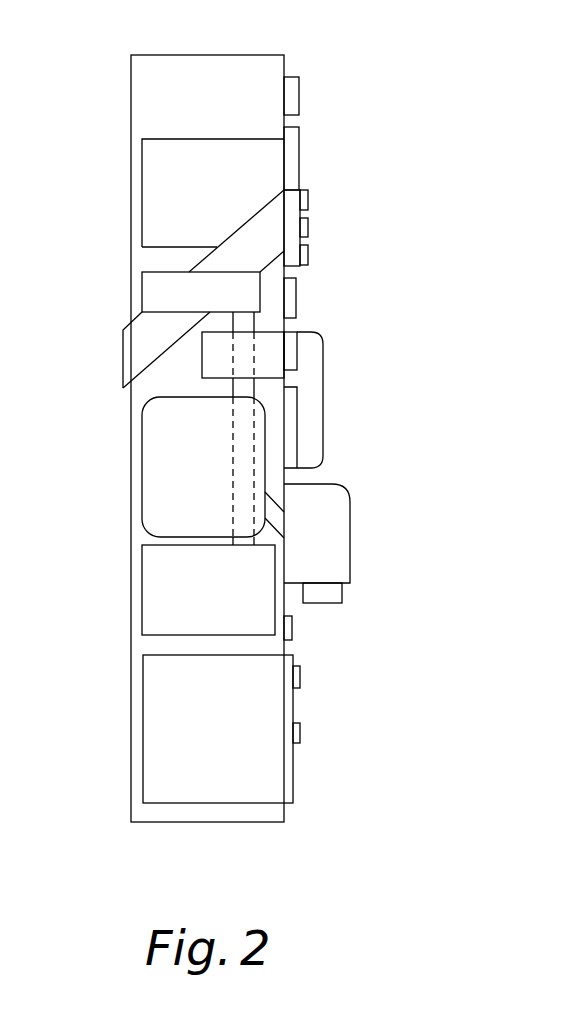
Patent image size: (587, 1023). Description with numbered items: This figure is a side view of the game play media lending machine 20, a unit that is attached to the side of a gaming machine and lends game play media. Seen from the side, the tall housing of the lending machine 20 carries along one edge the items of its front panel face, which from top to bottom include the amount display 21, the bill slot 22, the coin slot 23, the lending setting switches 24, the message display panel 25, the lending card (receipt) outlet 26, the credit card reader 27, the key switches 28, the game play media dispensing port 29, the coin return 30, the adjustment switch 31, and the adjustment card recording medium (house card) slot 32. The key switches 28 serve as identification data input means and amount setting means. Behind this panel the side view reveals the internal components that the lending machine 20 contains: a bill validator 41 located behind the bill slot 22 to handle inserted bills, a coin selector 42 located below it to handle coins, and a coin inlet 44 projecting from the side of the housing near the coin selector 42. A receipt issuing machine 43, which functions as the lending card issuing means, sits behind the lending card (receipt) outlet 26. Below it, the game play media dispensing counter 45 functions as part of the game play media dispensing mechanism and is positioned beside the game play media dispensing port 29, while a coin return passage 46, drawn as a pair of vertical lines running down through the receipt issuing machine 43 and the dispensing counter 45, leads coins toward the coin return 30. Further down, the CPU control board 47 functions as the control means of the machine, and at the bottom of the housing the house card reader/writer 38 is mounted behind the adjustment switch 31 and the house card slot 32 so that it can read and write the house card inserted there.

The game play media lending machine 20 is at (131, 55).
The amount display 21 is at (299, 96).
The bill slot 22 is at (299, 142).
The coin slot 23 is at (292, 190).
The lending setting switches 24 is at (308, 255).
The message display panel 25 is at (296, 300).
The lending card (receipt) outlet 26 is at (297, 352).
The credit card reader 27 is at (323, 375).
The key switches 28 is at (297, 430).
The game play media dispensing port 29 is at (342, 594).
The coin return 30 is at (292, 628).
The adjustment switch 31 is at (300, 677).
The adjustment card recording medium (house card) slot 32 is at (300, 733).
The house card reader/writer 38 is at (150, 735).
The bill validator 41 is at (150, 193).
The coin selector 42 is at (150, 291).
The receipt issuing machine 43 is at (212, 355).
The coin inlet 44 is at (123, 358).
The game play media dispensing counter 45 is at (150, 470).
The coin return passage 46 is at (233, 466).
The CPU control board 47 is at (150, 594).